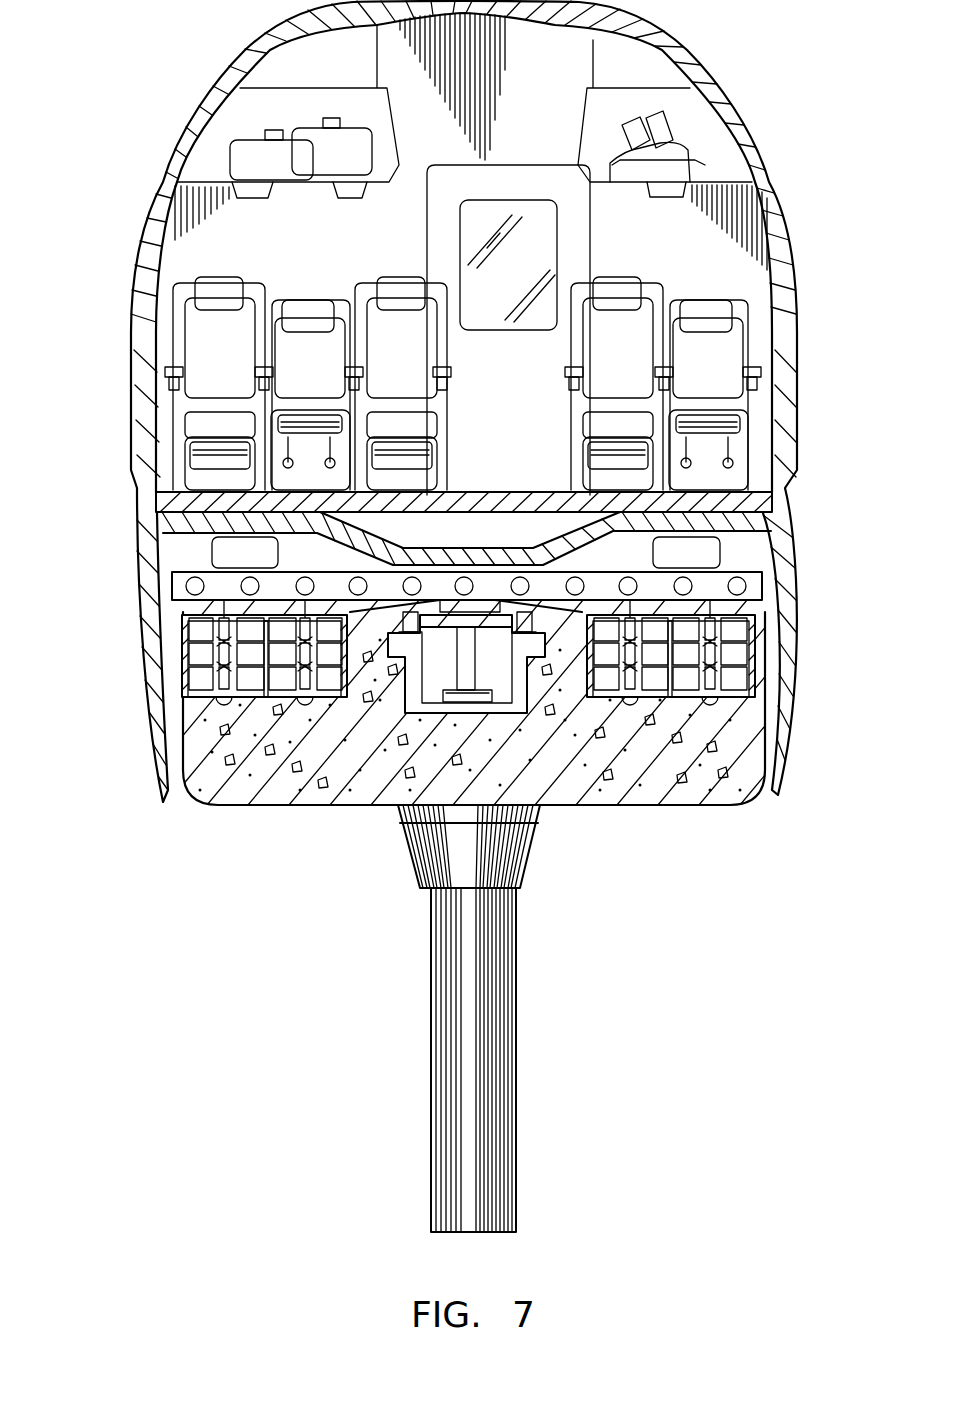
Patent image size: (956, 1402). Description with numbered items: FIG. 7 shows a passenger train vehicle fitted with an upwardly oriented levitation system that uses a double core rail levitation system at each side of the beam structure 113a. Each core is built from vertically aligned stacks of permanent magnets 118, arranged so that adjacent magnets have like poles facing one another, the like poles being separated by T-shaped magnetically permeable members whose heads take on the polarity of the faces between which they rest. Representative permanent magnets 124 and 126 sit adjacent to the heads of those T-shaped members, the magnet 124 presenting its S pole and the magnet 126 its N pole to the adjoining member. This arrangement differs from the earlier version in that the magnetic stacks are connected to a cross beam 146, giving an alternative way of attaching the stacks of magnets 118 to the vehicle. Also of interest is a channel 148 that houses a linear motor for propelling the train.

The downwardly extending surface 113a is at (358, 788).
The permanent magnets 118 is at (200, 685).
The permanent magnet 124 is at (230, 640).
The permanent magnet 126 is at (232, 667).
The cross beam 146 is at (180, 582).
The channel 148 is at (492, 705).